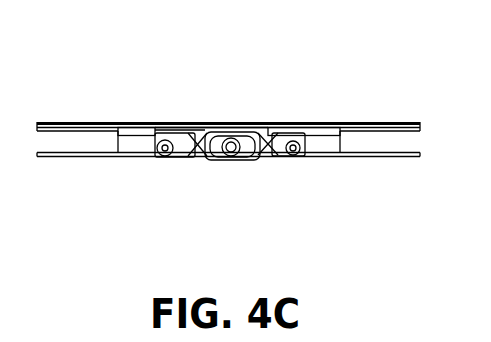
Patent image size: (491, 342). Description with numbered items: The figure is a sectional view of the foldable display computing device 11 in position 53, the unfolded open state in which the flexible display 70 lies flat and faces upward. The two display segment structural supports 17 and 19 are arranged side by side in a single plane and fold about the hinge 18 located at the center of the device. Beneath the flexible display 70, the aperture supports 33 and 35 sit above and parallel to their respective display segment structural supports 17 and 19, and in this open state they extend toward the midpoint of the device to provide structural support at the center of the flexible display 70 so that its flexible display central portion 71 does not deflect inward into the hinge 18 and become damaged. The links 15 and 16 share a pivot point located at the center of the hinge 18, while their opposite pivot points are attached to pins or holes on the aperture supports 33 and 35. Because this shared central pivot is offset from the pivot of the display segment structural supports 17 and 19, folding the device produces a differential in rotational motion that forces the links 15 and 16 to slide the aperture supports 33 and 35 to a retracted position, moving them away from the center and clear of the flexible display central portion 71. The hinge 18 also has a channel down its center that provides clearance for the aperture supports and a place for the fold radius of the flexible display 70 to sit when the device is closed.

The position 53 is at (47, 33).
The foldable display computing device 11 is at (422, 124).
The flexible display 70 is at (84, 122).
The aperture support 33 is at (168, 132).
The aperture support 35 is at (282, 130).
The flexible display central portion 71 is at (236, 131).
The display segment structural support 17 is at (62, 157).
The display segment structural support 19 is at (394, 157).
The link 15 is at (162, 160).
The hinge 18 is at (243, 161).
The link 16 is at (289, 157).